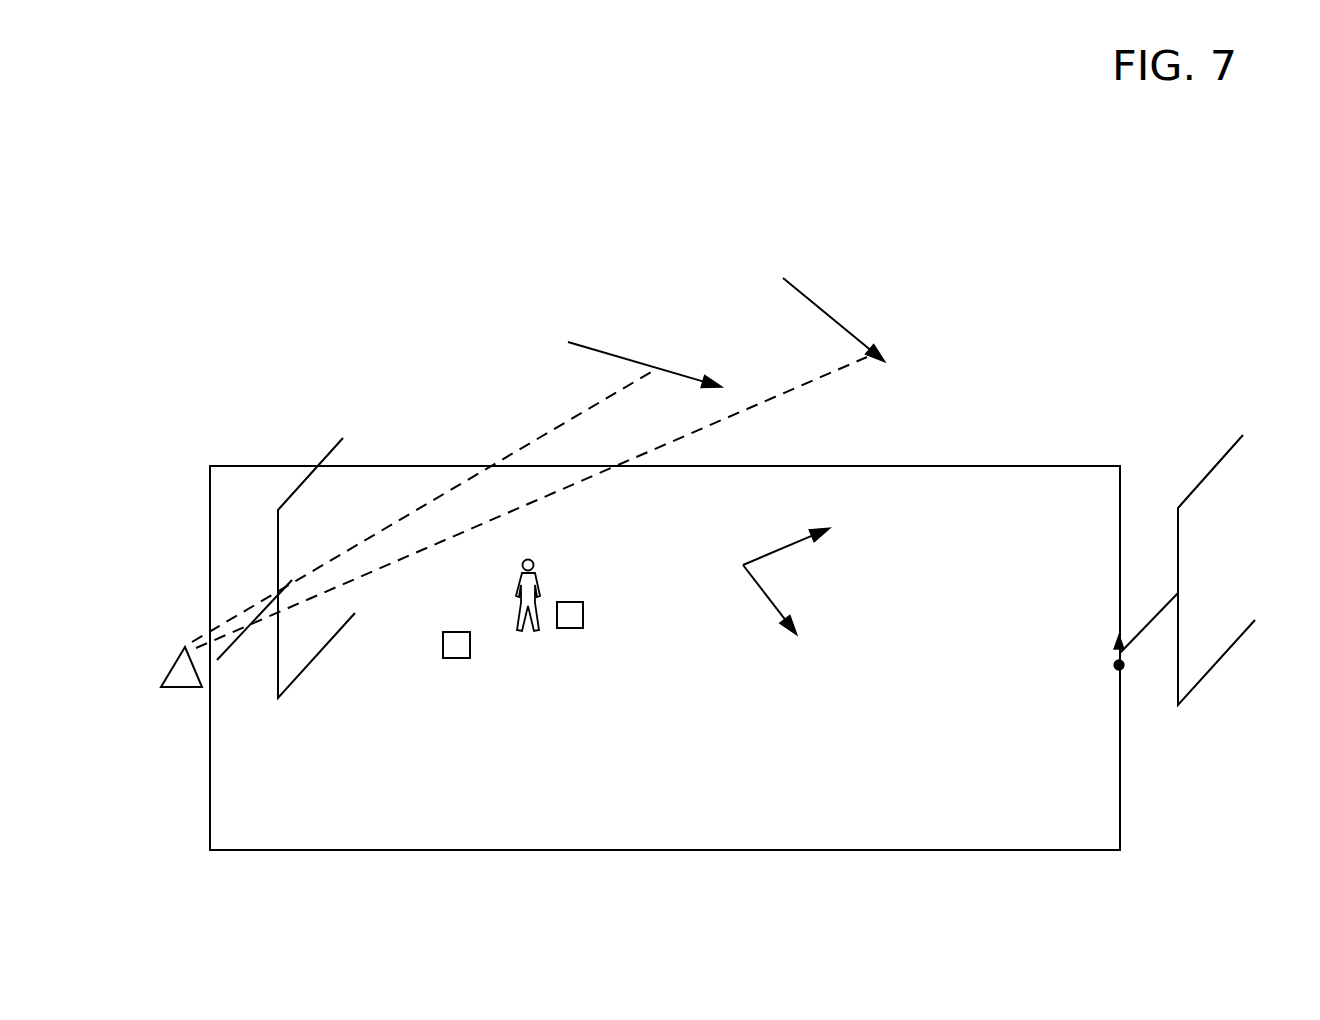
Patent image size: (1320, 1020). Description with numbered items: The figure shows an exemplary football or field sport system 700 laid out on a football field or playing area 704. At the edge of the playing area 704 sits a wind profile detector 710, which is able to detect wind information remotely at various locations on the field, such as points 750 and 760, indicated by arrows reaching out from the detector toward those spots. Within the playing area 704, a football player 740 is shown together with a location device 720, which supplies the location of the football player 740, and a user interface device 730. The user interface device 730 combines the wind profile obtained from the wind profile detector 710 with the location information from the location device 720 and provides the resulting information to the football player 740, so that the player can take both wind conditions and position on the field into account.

The football system 700 is at (443, 327).
The football field or playing area 704 is at (1027, 818).
The wind profile detector 710 is at (183, 675).
The location device 720 is at (456, 647).
The user interface device 730 is at (570, 618).
The football player 740 is at (503, 603).
The point 750 is at (663, 368).
The point 760 is at (865, 352).